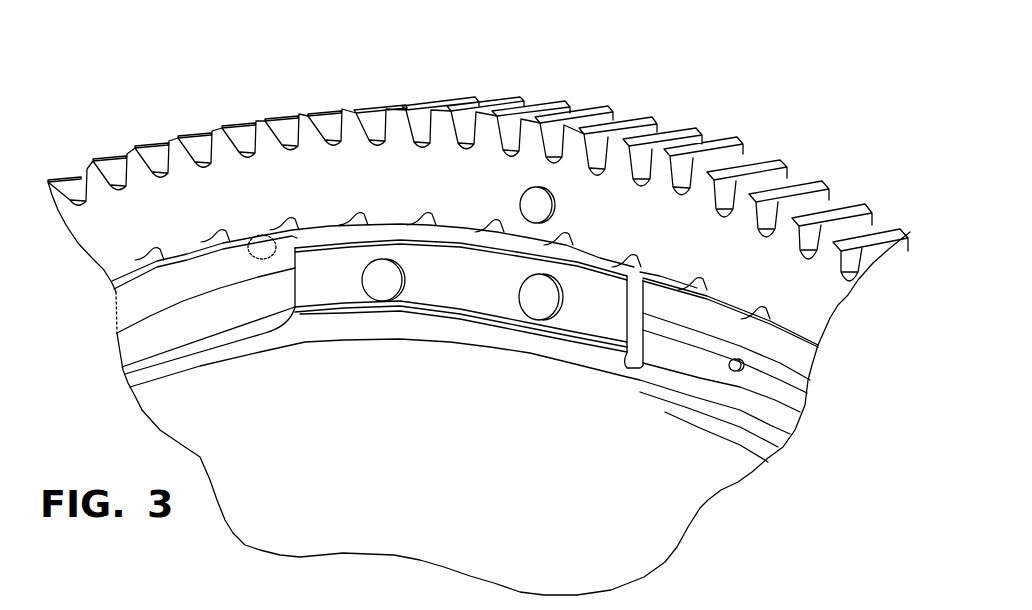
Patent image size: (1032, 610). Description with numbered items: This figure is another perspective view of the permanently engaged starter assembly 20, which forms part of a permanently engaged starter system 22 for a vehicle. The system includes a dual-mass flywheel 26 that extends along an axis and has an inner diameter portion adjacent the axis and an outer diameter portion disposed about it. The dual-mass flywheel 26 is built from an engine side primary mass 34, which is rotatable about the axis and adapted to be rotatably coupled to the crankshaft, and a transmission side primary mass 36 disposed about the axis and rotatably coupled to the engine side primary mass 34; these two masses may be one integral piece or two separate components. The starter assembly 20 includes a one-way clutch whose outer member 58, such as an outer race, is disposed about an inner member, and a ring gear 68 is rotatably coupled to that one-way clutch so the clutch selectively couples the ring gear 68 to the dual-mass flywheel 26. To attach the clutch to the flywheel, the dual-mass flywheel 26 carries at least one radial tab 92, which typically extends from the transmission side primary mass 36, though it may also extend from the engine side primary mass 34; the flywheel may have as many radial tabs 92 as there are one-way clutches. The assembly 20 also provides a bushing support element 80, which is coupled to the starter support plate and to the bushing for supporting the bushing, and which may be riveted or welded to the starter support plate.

The permanently engaged starter assembly 20 is at (165, 107).
The permanently engaged starter system 22 is at (97, 110).
The dual-mass flywheel 26 is at (480, 357).
The engine side primary mass 34 is at (703, 378).
The transmission side primary mass 36 is at (657, 485).
The outer member 58 is at (248, 243).
The ring gear 68 is at (617, 193).
The bushing support element 80 is at (173, 323).
The radial tab 92 is at (457, 277).